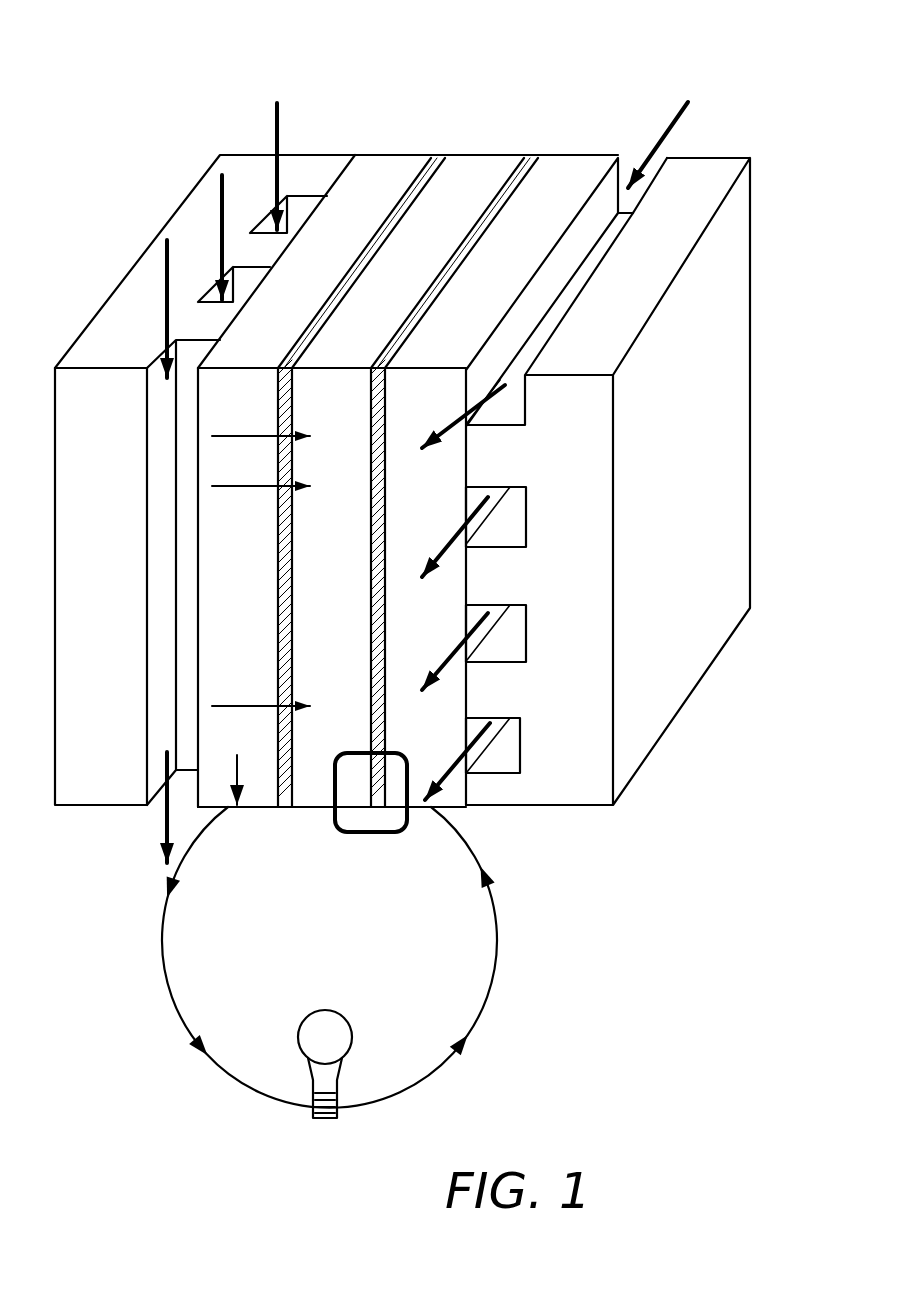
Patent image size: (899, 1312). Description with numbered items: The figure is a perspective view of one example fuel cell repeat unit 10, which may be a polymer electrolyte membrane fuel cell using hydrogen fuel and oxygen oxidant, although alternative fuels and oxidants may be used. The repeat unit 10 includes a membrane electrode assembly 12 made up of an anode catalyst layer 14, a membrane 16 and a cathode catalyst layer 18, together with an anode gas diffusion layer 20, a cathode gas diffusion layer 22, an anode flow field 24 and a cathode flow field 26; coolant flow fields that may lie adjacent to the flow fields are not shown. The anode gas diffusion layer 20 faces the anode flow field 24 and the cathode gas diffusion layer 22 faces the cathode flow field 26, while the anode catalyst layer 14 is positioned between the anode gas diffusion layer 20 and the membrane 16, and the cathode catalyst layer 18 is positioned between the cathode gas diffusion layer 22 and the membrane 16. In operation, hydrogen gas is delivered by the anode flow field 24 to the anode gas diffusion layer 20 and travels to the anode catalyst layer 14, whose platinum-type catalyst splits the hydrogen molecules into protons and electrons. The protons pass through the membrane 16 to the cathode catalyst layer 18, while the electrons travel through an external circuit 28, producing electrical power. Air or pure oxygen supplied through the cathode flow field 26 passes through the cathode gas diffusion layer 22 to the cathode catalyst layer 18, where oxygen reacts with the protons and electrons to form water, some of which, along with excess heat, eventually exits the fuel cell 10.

The fuel cell repeat unit 10 is at (100, 172).
The membrane electrode assembly 12 is at (755, 152).
The anode catalyst layer 14 is at (373, 248).
The membrane 16 is at (408, 482).
The cathode catalyst layer 18 is at (442, 280).
The anode gas diffusion layer 20 is at (332, 491).
The cathode gas diffusion layer 22 is at (526, 481).
The anode flow field 24 is at (303, 207).
The cathode flow field 26 is at (510, 408).
The external circuit 28 is at (163, 967).